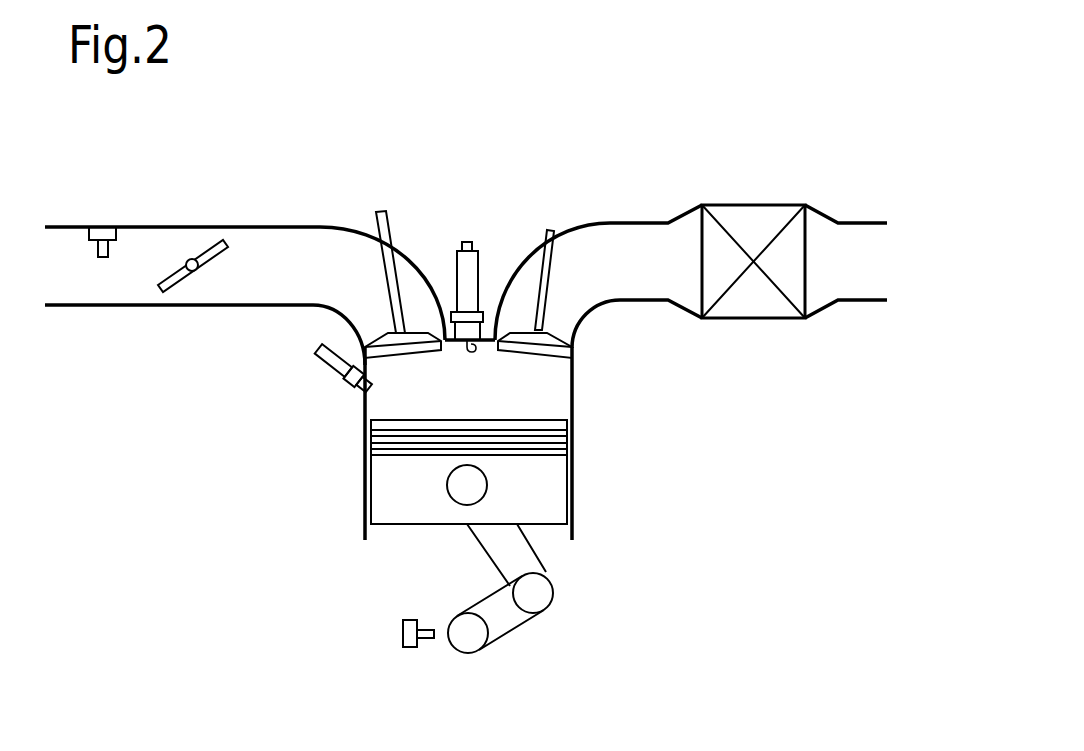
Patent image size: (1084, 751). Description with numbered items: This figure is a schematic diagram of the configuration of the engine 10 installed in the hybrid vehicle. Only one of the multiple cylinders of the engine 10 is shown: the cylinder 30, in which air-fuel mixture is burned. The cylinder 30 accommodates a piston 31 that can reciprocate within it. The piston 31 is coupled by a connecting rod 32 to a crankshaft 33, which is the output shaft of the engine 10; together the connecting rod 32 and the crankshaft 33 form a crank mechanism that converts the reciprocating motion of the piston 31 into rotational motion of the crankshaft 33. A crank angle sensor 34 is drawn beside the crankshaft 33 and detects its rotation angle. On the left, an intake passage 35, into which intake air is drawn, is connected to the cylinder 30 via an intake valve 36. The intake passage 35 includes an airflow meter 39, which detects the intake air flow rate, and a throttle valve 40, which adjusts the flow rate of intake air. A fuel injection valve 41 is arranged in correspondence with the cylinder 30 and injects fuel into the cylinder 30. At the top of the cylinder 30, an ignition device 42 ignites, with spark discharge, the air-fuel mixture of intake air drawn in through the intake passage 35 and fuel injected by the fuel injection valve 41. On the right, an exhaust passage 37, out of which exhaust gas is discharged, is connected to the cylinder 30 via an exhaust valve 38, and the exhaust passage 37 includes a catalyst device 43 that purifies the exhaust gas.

The engine 10 is at (194, 172).
The cylinder 30 is at (483, 393).
The piston 31 is at (383, 476).
The connecting rod 32 is at (535, 553).
The crankshaft 33 is at (465, 628).
The crank angle sensor 34 is at (410, 620).
The intake passage 35 is at (253, 292).
The intake valve 36 is at (398, 290).
The exhaust passage 37 is at (646, 290).
The exhaust valve 38 is at (556, 270).
The airflow meter 39 is at (92, 250).
The throttle valve 40 is at (181, 282).
The fuel injection valve 41 is at (322, 364).
The ignition device 42 is at (479, 275).
The catalyst device 43 is at (757, 308).